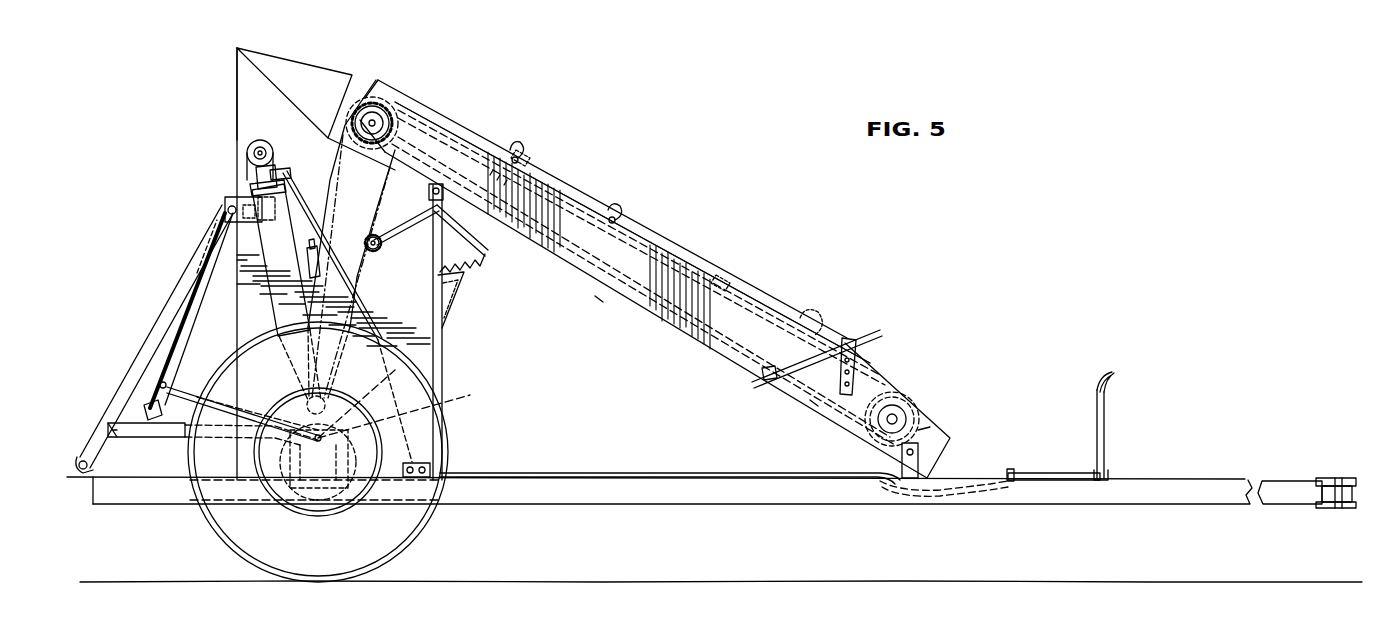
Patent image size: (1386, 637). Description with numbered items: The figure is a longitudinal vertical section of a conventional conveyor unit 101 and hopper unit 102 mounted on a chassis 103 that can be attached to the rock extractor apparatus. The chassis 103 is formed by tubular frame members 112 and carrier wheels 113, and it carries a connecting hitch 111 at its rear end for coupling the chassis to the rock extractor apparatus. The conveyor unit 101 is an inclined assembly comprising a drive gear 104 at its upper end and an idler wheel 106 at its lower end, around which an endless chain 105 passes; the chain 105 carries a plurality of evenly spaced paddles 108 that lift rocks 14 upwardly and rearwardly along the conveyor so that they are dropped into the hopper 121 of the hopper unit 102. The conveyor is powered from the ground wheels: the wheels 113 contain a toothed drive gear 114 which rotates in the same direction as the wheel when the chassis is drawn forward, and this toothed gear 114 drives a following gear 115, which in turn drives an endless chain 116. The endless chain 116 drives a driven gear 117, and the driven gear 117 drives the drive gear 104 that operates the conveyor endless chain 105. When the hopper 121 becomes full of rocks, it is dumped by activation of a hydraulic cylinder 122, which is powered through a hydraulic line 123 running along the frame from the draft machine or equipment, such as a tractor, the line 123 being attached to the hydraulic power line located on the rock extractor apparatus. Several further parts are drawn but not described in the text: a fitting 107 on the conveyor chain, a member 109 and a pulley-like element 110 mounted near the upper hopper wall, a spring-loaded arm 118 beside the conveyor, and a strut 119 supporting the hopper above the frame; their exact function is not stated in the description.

The rocks 14 is at (520, 125).
The conveyor unit 101 is at (727, 228).
The hopper unit 102 is at (325, 42).
The chassis 103 is at (1172, 447).
The drive gear 104 is at (362, 93).
The endless chain 105 is at (648, 240).
The idler wheel 106 is at (900, 395).
The belt flights 107 is at (548, 240).
The paddles 108 is at (533, 165).
The hydraulic cylinder 109 is at (250, 173).
The pulley 110 is at (247, 150).
The connecting hitch 111 is at (1340, 480).
The tubular frame members 112 is at (665, 499).
The carrier wheels 113 is at (440, 422).
The toothed drive gear 114 is at (342, 500).
The following gear 115 is at (346, 383).
The endless chain 116 is at (370, 262).
The driven gear 117 is at (351, 203).
The spring arm 118 is at (458, 300).
The support strut 119 is at (133, 433).
The hopper 121 is at (252, 84).
The hydraulic cylinder 122 is at (285, 300).
The hydraulic line 123 is at (580, 472).